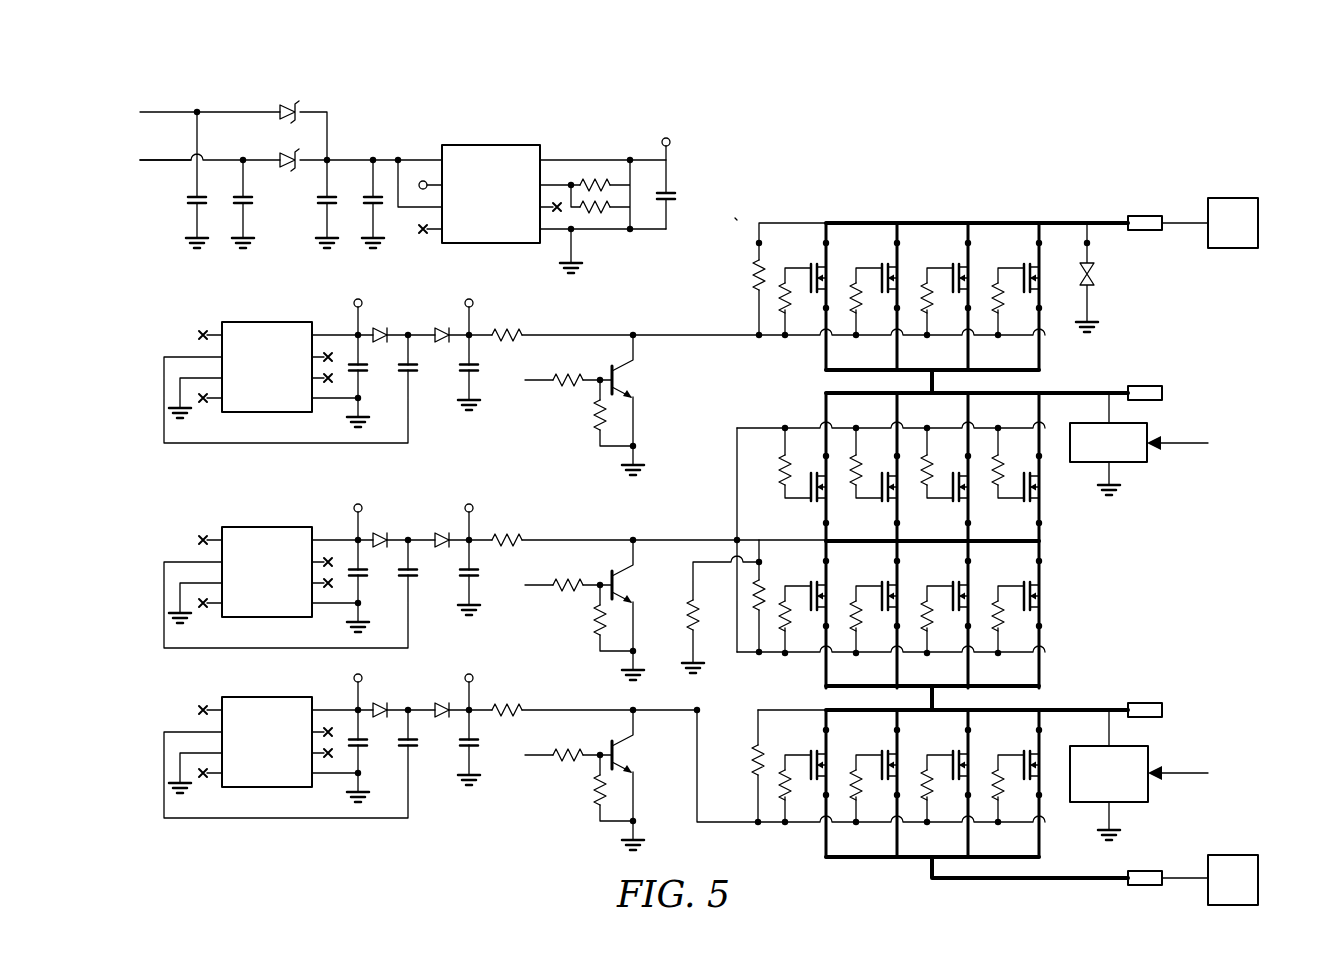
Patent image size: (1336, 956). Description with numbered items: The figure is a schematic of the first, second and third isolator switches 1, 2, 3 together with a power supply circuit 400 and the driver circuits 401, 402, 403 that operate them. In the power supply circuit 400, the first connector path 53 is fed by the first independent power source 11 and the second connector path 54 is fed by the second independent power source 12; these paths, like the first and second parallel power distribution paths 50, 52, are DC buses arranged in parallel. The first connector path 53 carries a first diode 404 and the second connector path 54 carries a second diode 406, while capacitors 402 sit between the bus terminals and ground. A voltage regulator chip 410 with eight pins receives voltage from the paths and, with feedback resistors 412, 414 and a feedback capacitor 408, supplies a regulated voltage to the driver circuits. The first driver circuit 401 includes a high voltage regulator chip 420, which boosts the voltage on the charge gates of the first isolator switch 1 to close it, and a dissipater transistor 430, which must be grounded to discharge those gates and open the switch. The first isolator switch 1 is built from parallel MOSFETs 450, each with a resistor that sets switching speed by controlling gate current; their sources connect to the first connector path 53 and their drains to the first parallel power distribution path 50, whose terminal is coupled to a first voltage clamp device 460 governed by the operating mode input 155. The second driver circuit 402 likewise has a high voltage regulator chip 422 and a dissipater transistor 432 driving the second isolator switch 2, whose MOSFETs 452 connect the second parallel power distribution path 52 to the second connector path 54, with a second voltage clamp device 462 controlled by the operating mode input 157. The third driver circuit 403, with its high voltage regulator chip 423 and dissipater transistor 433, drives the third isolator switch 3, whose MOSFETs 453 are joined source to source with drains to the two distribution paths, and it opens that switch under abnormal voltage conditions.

The power supply circuit 400 is at (185, 97).
The first connector path 53 is at (140, 113).
The second connector path 54 is at (156, 162).
The first diode 404 is at (302, 107).
The second diode 406 is at (302, 156).
The capacitors / second driver circuit 402 is at (195, 210).
The voltage regulator chip 410 is at (490, 145).
The feedback resistor 412 is at (592, 182).
The feedback resistor 414 is at (600, 214).
The feedback capacitor 408 is at (670, 193).
The first isolator switch 1 is at (736, 219).
The first driver circuit 401 is at (165, 338).
The high voltage regulator chip 420 is at (285, 413).
The dissipater transistor 430 is at (625, 372).
The third driver circuit 403 is at (165, 540).
The high voltage regulator chip 423 is at (285, 618).
The dissipater transistor 433 is at (625, 578).
The high voltage regulator chip 422 is at (285, 788).
The dissipater transistor 432 is at (625, 748).
The MOSFETs 450 is at (783, 312).
The third isolator switch 3 is at (745, 418).
The MOSFETs 453 is at (783, 486).
The second isolator switch 2 is at (748, 715).
The MOSFETs 452 is at (783, 800).
The first independent power source 11 is at (1259, 222).
The first parallel power distribution path 50 is at (1098, 392).
The first voltage clamp device 460 is at (1150, 428).
The operating mode input 155 is at (1182, 446).
The second parallel power distribution path 52 is at (1098, 709).
The second voltage clamp device 462 is at (1150, 755).
The operating mode input 157 is at (1182, 776).
The second independent power source 12 is at (1259, 880).